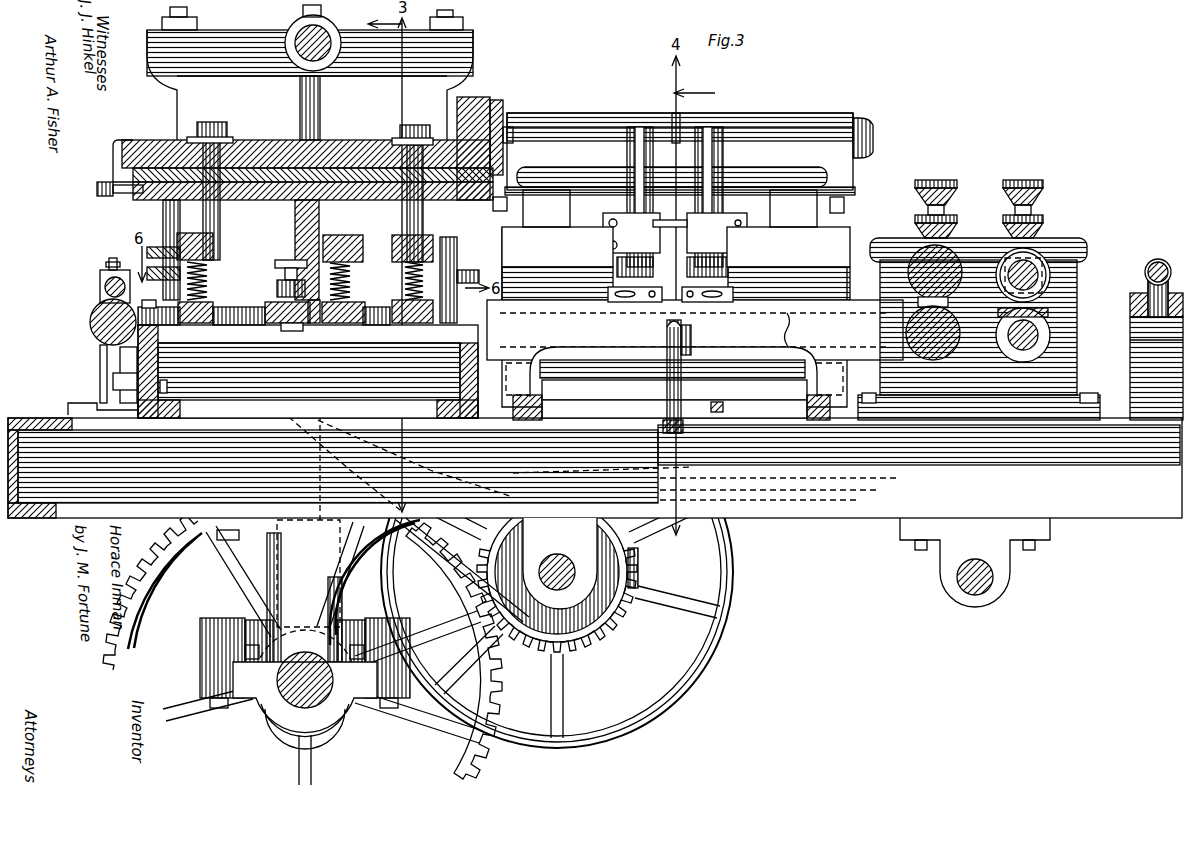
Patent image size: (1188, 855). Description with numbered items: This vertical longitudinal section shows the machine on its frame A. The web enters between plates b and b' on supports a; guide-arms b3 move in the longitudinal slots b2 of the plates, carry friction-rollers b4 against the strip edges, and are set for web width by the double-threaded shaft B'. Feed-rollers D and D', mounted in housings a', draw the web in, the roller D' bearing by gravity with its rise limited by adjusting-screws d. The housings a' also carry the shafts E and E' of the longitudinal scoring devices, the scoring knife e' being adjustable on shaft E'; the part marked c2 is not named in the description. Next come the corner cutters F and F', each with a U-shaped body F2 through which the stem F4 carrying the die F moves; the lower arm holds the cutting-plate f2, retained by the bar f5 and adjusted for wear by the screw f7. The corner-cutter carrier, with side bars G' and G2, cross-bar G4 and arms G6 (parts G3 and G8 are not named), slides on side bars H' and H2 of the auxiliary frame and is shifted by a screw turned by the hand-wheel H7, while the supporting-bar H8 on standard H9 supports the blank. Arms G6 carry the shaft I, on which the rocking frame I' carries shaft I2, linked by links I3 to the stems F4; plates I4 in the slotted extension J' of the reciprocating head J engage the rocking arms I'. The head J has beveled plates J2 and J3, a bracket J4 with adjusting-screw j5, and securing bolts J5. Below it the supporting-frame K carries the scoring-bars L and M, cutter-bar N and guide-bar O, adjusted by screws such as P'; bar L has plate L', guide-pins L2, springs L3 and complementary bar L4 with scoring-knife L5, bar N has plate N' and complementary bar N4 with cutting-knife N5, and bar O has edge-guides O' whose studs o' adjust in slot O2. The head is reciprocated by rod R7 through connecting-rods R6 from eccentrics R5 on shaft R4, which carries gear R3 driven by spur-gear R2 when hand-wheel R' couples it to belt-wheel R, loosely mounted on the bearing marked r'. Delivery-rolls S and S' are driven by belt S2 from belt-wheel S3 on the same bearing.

The bed A is at (595, 512).
The housing J is at (306, 87).
The end block J' is at (473, 134).
The rail J2 is at (274, 186).
The rail J3 is at (313, 200).
The bracket J4 is at (113, 170).
The screw J5 is at (418, 125).
The screw j5 is at (109, 185).
The bearing R7 is at (335, 32).
The rod R6 is at (296, 199).
The bracket R5 is at (300, 610).
The hub R4 is at (288, 712).
The toothed sector R3 is at (490, 756).
The pawl R2 is at (648, 563).
The gear R' is at (575, 583).
The wheel R is at (567, 572).
The shaft r' is at (557, 561).
The frame plate I is at (690, 187).
The cylinder I' is at (683, 154).
The rod I2 is at (582, 130).
The pin I3 is at (678, 118).
The head plate I4 is at (504, 108).
The slide F is at (609, 260).
The slide F' is at (733, 260).
The clamp post F2 is at (672, 197).
The cross bar F4 is at (670, 210).
The frame G' is at (676, 317).
The plate G2 is at (674, 379).
The block G3 is at (557, 247).
The guide G4 is at (676, 283).
The block G6 is at (546, 208).
The block G8 is at (793, 208).
The block H' is at (686, 429).
The block H2 is at (530, 423).
The foot H7 is at (722, 402).
The hood H8 is at (673, 357).
The plate H9 is at (666, 374).
The bar K is at (695, 330).
The pin f2 is at (667, 322).
The spring f5 is at (706, 336).
The slotted plate f7 is at (735, 300).
The carriage M is at (308, 371).
The rack N is at (174, 334).
The block N' is at (207, 304).
The block N4 is at (213, 246).
The shaft N5 is at (140, 268).
The rack O is at (261, 325).
The knob O' is at (278, 276).
The block O2 is at (285, 324).
The piece o' is at (292, 333).
The block L is at (412, 314).
The block L' is at (354, 304).
The bar L2 is at (456, 246).
The rack L3 is at (390, 330).
The block L4 is at (400, 240).
The spring block L5 is at (352, 267).
The pawl P' is at (147, 296).
The roller S is at (101, 280).
The wheel S' is at (98, 357).
The rod S2 is at (462, 568).
The hub plate S3 is at (560, 570).
The roller D is at (933, 343).
The roller D' is at (924, 272).
The roller E is at (1023, 348).
The roller E' is at (1032, 261).
The knob d is at (941, 209).
The knob e' is at (1013, 216).
The cap c2 is at (1000, 312).
The column a is at (1156, 368).
The block a' is at (979, 329).
The bearing B' is at (1160, 258).
The cap b is at (1146, 299).
The joint b' is at (1145, 330).
The stem b2 is at (1160, 320).
The ring b3 is at (1146, 280).
The joint b4 is at (1130, 345).